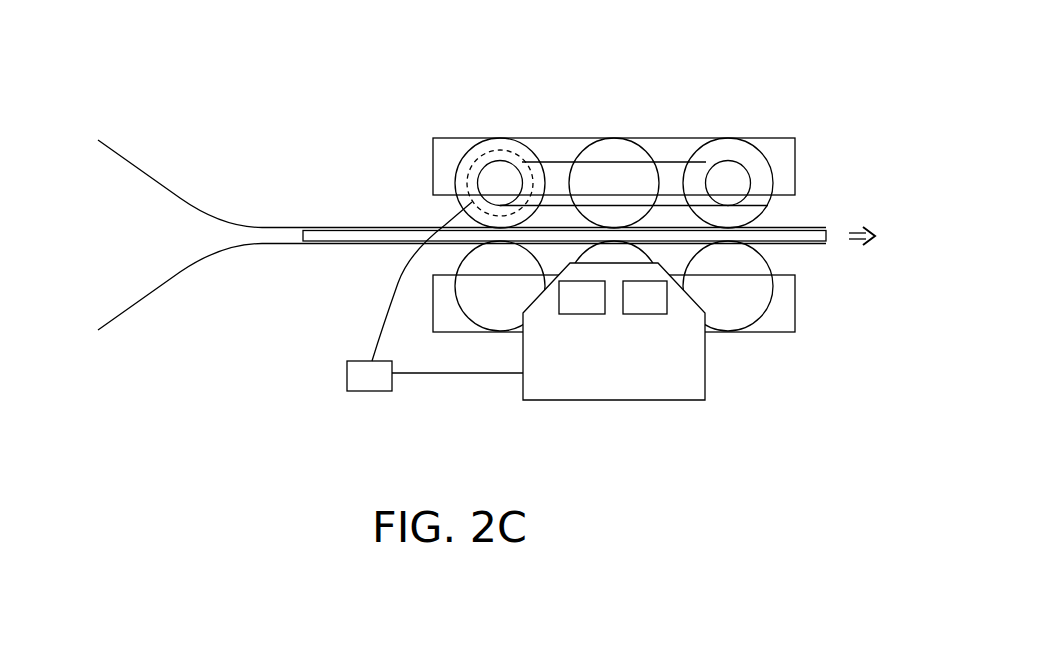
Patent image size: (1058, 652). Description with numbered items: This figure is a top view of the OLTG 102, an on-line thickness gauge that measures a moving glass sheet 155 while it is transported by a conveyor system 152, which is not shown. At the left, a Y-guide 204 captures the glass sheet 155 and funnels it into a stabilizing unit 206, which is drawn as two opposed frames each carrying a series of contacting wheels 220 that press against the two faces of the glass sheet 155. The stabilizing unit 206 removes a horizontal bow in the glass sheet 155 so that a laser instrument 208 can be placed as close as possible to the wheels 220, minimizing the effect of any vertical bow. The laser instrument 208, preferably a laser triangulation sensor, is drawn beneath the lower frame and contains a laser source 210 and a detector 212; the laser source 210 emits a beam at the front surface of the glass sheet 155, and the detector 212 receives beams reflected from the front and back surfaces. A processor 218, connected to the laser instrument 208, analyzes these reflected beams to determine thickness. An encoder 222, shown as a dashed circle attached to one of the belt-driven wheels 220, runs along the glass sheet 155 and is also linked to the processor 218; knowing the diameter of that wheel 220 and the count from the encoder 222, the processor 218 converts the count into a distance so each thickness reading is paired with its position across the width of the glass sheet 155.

The OLTG 102 is at (820, 44).
The conveyor system 152 is at (454, 440).
The glass sheet 155 is at (396, 243).
The Y-guide 204 is at (145, 170).
The stabilizing unit 206 is at (795, 166).
The laser instrument 208 is at (705, 372).
The laser source 210 is at (645, 297).
The detector 212 is at (582, 297).
The processor 218 is at (435, 296).
The contacting wheels 220 is at (481, 139).
The encoder 222 is at (508, 152).